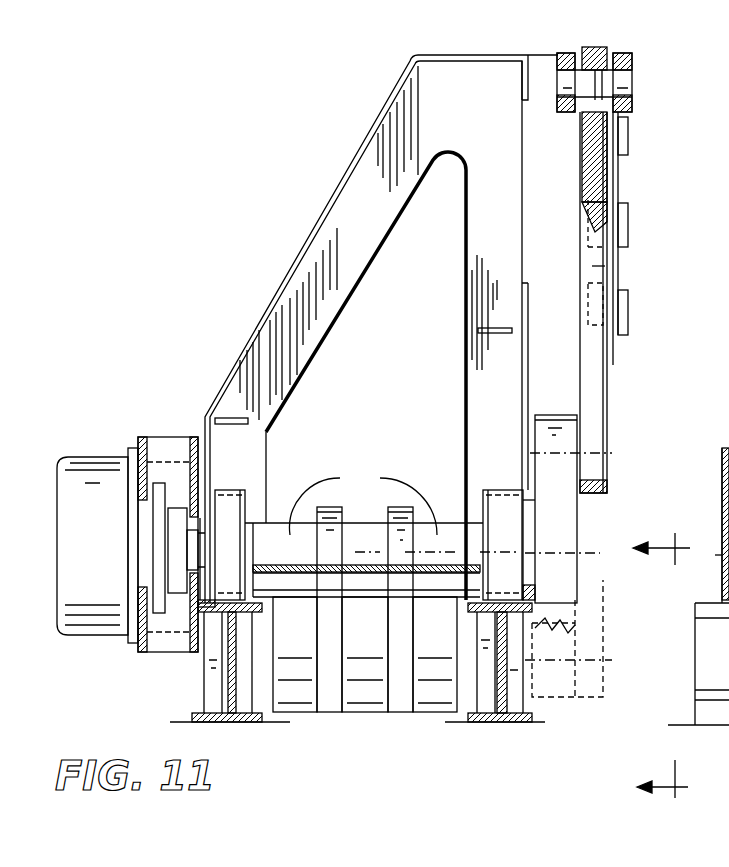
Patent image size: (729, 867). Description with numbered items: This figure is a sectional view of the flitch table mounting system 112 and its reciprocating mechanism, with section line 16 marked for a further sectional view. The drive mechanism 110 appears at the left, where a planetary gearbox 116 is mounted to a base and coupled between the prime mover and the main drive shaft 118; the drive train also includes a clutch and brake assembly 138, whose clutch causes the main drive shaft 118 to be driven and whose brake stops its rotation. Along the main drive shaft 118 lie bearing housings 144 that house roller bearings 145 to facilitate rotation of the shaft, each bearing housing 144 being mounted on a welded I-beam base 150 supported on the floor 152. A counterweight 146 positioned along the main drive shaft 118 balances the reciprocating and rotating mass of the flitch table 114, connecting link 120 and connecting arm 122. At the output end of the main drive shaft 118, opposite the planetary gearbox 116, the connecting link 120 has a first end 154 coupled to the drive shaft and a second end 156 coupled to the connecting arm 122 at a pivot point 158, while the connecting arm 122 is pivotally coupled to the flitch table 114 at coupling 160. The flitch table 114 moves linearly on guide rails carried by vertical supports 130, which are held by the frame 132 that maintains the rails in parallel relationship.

The drive mechanism 110 is at (140, 394).
The flitch table mounting system 112 is at (298, 130).
The flitch table 114 is at (646, 214).
The planetary gearbox 116 is at (114, 449).
The main drive shaft 118 is at (364, 536).
The connecting link 120 is at (562, 503).
The connecting arm 122 is at (605, 266).
The vertical supports 130 is at (545, 115).
The frame 132 is at (335, 256).
The clutch and brake assembly 138 is at (181, 414).
The bearing housings 144 is at (232, 497).
The roller bearings 145 is at (240, 513).
The counterweight 146 is at (368, 650).
The welded I-beam base 150 is at (243, 685).
The floor 152 is at (537, 735).
The first end 154 is at (574, 583).
The second end 156 is at (527, 424).
The pivot point 158 is at (592, 462).
The pivotal coupling of connecting arm to flitch table 160 is at (610, 82).
The section line 16- 16 is at (681, 660).